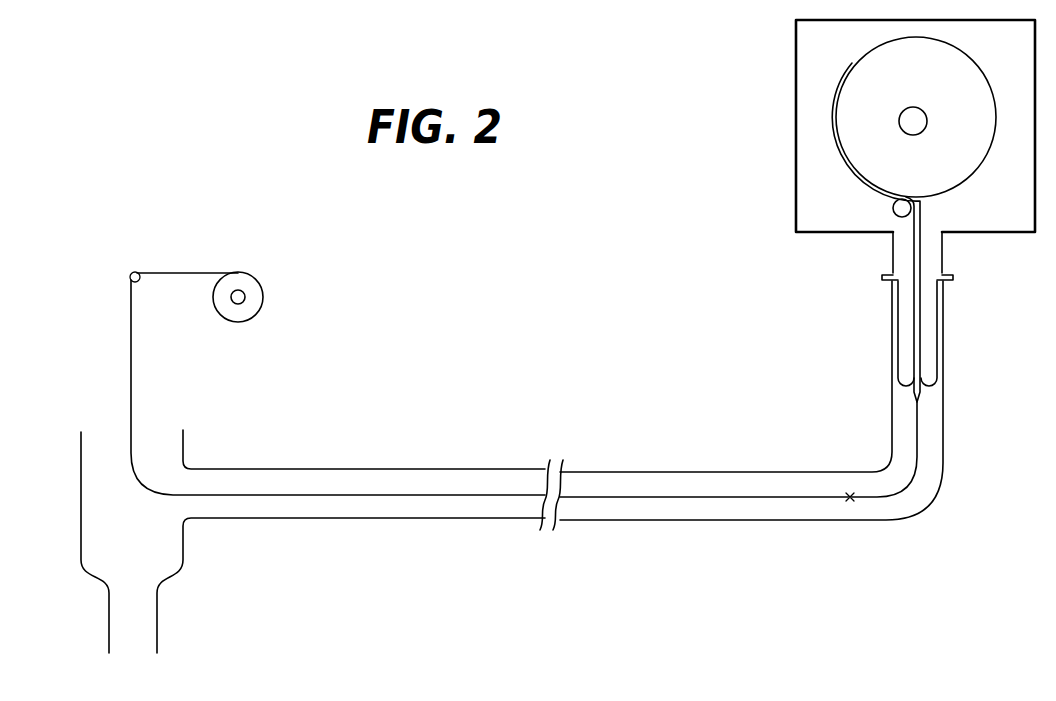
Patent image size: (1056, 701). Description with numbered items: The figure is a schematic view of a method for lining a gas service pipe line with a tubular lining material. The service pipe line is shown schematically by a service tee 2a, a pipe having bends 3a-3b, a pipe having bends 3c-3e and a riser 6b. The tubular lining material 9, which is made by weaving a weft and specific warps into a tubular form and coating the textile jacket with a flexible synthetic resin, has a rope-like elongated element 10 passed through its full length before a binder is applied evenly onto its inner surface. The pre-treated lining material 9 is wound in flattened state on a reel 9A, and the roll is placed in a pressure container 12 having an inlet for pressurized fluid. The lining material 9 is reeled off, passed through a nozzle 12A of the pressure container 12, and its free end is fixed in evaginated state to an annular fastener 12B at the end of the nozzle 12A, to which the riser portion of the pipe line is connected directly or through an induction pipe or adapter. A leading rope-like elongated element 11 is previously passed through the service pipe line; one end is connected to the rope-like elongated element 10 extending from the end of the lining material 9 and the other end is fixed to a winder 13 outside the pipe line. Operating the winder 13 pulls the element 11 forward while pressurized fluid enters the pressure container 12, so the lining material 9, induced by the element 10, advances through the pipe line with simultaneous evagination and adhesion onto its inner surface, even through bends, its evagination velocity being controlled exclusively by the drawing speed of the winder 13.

The service tee 2a is at (81, 432).
The pipe having bends 3a-3b is at (378, 518).
The pipe having bends 3c-3e is at (663, 520).
The riser 6b is at (943, 400).
The tubular lining material 9 is at (922, 253).
The reel 9A is at (911, 122).
The rope-like elongated element 10 is at (918, 443).
The leading rope-like elongated element 11 is at (710, 493).
The pressure container 12 is at (813, 188).
The nozzle 12A is at (893, 262).
The annular fastener 12B is at (953, 278).
The winder 13 is at (255, 293).